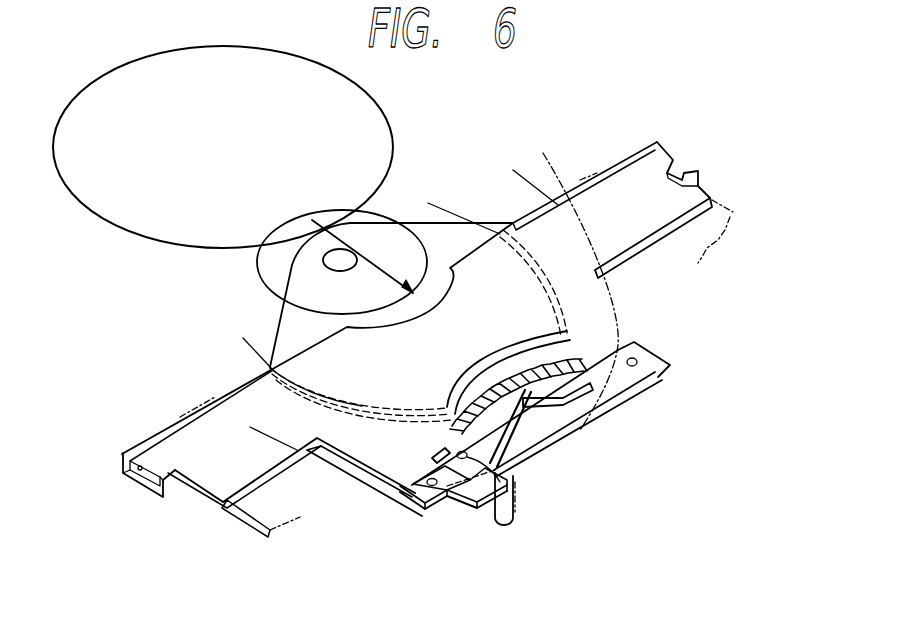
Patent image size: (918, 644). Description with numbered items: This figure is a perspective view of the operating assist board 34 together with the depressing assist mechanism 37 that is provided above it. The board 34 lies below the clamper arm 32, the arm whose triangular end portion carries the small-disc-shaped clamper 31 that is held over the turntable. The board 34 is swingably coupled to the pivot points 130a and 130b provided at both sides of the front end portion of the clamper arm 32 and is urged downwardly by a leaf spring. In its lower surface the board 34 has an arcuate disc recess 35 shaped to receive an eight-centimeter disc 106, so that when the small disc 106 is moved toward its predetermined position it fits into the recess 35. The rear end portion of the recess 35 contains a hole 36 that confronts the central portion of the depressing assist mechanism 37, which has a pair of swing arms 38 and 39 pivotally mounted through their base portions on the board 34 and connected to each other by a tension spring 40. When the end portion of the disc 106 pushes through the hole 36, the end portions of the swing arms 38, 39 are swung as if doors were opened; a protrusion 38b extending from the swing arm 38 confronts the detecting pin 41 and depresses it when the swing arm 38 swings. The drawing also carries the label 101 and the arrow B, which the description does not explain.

The disc 106 is at (385, 97).
The disc outline 101 is at (574, 279).
The clamper 31 is at (257, 265).
The operating assist board 34 is at (367, 447).
The pivot point 130a is at (143, 470).
The pivot point 130b is at (665, 157).
The clamper arm 32 is at (255, 530).
The arcuate disc recess 35 is at (573, 303).
The hole 36 is at (578, 363).
The swing arm 39 is at (650, 383).
The direction B is at (592, 385).
The tension spring 40 is at (520, 360).
The depressing assist mechanism 37 is at (548, 460).
The swing arm 38 is at (443, 497).
The protrusion 38b is at (475, 510).
The detecting pin 41 is at (516, 520).